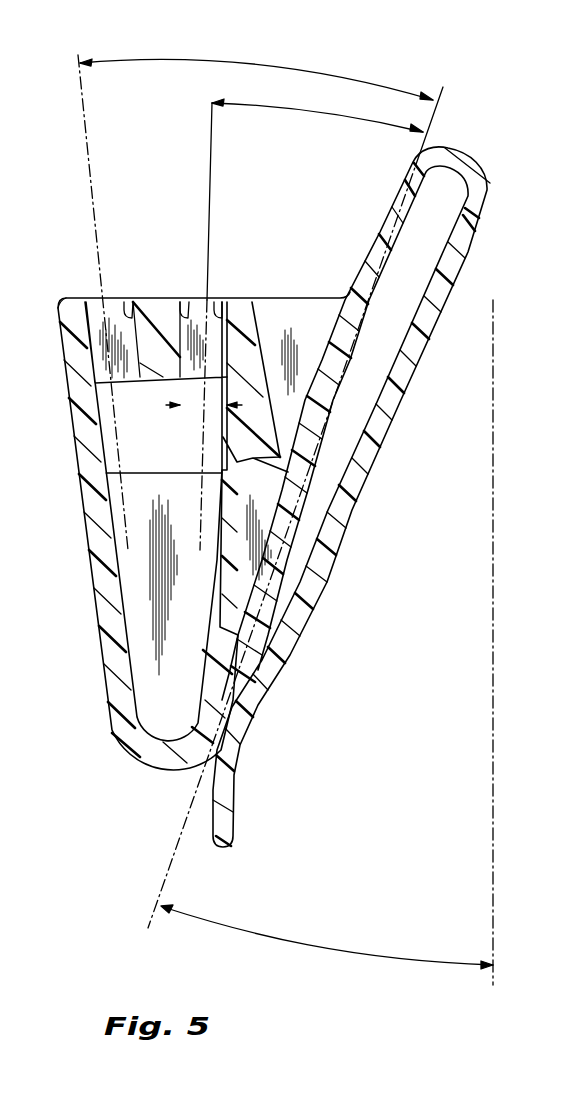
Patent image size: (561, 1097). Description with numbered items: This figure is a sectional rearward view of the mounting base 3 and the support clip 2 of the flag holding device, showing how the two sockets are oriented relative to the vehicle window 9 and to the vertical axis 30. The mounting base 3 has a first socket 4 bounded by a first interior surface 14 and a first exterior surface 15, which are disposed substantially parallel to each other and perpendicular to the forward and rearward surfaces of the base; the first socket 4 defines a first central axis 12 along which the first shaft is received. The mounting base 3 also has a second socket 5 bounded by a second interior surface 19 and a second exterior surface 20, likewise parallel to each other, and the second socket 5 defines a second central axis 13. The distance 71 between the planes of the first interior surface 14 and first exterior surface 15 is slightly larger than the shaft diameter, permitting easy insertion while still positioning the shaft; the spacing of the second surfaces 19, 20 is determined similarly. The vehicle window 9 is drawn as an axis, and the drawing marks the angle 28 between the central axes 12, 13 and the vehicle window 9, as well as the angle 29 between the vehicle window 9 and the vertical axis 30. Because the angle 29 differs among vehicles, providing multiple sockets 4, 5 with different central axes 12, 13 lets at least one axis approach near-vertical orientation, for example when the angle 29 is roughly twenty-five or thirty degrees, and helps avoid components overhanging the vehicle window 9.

The support clip 2 is at (456, 263).
The mounting base 3 is at (122, 733).
The first socket 4 is at (197, 312).
The second socket 5 is at (96, 312).
The vehicle window 9 is at (165, 881).
The first central axis 12 is at (212, 142).
The second central axis 13 is at (86, 92).
The first interior surface 14 is at (225, 300).
The first exterior surface 15 is at (188, 300).
The second interior surface 19 is at (124, 300).
The second exterior surface 20 is at (83, 300).
The angle 28 is at (331, 115).
The angle 29 is at (330, 950).
The vertical axis 30 is at (497, 917).
The distance 71 is at (204, 406).